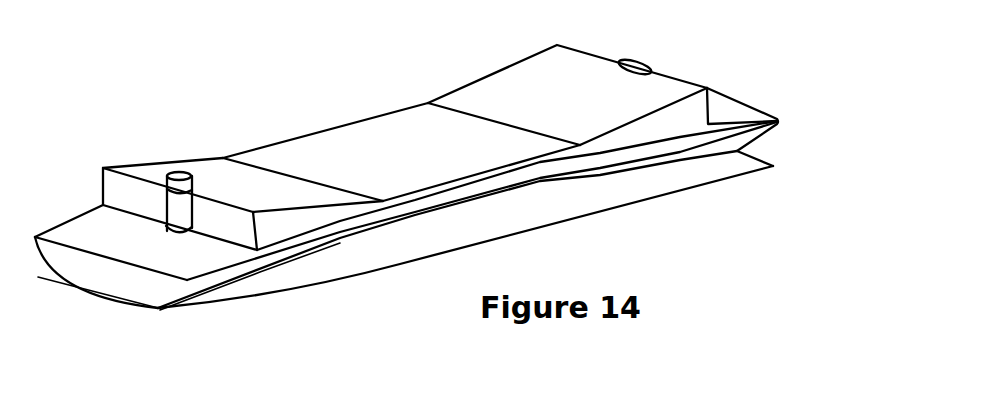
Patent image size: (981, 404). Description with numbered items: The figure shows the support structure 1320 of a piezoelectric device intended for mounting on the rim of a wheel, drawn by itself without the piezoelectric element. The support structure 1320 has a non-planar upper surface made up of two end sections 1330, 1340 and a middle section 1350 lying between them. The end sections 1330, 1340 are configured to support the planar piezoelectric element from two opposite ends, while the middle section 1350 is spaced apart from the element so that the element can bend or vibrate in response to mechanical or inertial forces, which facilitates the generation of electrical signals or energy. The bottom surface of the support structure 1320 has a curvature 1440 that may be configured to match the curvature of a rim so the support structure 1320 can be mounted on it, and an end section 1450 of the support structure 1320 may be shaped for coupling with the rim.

The support structure 1320 is at (735, 138).
The end section 1330 is at (220, 166).
The end section 1340 is at (527, 77).
The middle section 1350 is at (405, 130).
The curvature 1440 is at (500, 192).
The end section 1450 is at (160, 310).